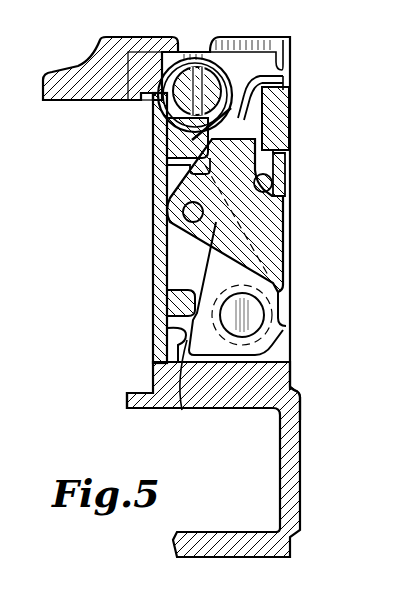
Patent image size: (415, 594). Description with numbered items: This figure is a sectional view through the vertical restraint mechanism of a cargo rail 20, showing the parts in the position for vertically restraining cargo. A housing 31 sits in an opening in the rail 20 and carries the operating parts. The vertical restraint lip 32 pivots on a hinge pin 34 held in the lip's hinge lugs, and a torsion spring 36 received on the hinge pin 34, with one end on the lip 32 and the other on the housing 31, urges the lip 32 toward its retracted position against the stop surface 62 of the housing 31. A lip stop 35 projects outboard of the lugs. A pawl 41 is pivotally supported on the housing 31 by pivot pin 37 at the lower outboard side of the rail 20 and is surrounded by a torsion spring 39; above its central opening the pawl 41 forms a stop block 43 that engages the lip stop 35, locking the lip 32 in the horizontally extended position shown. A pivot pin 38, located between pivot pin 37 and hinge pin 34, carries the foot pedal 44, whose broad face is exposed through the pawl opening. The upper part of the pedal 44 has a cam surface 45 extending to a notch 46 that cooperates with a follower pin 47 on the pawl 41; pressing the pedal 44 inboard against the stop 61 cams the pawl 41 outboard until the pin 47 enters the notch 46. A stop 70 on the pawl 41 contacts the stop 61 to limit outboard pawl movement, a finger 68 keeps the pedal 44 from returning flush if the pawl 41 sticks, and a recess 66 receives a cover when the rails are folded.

The rail 20 is at (152, 409).
The housing 31 is at (155, 280).
The vertical restraint lip 32 is at (62, 71).
The hinge pin 34 is at (188, 97).
The lip stop 35 is at (292, 79).
The torsion spring 36 is at (222, 47).
The pivot pin 37 is at (262, 320).
The pivot pin 38 is at (188, 226).
The torsion spring 39 is at (288, 363).
The pawl 41 is at (197, 278).
The stop block 43 is at (275, 120).
The foot pedal 44 is at (273, 237).
The cam surface 45 is at (286, 175).
The notch 46 is at (288, 70).
The follower pin 47 is at (270, 187).
The stop 61 is at (187, 328).
The stop surface 62 is at (192, 172).
The recess 66 is at (297, 381).
The finger 68 is at (280, 150).
The stop 70 is at (182, 410).